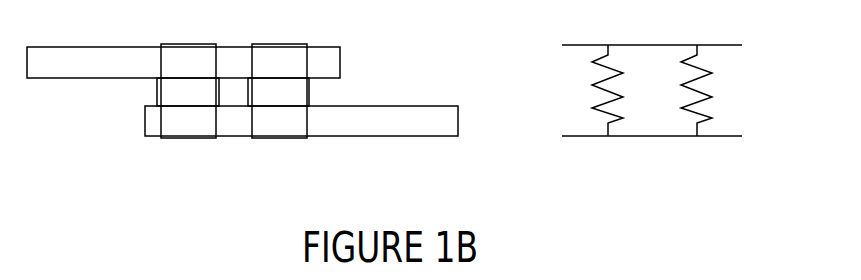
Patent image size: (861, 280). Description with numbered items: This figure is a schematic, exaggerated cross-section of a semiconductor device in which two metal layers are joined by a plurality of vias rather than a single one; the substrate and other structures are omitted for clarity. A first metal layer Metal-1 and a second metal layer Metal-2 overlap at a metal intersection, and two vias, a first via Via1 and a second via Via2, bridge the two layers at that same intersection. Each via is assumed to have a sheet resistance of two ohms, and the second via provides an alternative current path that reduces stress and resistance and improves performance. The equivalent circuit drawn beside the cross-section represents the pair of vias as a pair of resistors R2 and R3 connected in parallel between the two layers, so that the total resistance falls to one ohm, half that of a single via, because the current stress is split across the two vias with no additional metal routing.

The first metal layer Metal-1 is at (183, 62).
The second metal layer Metal-2 is at (301, 121).
The first via Via1 is at (188, 91).
The second via Via2 is at (278, 91).
The resistor R2 is at (625, 90).
The resistor R3 is at (715, 90).